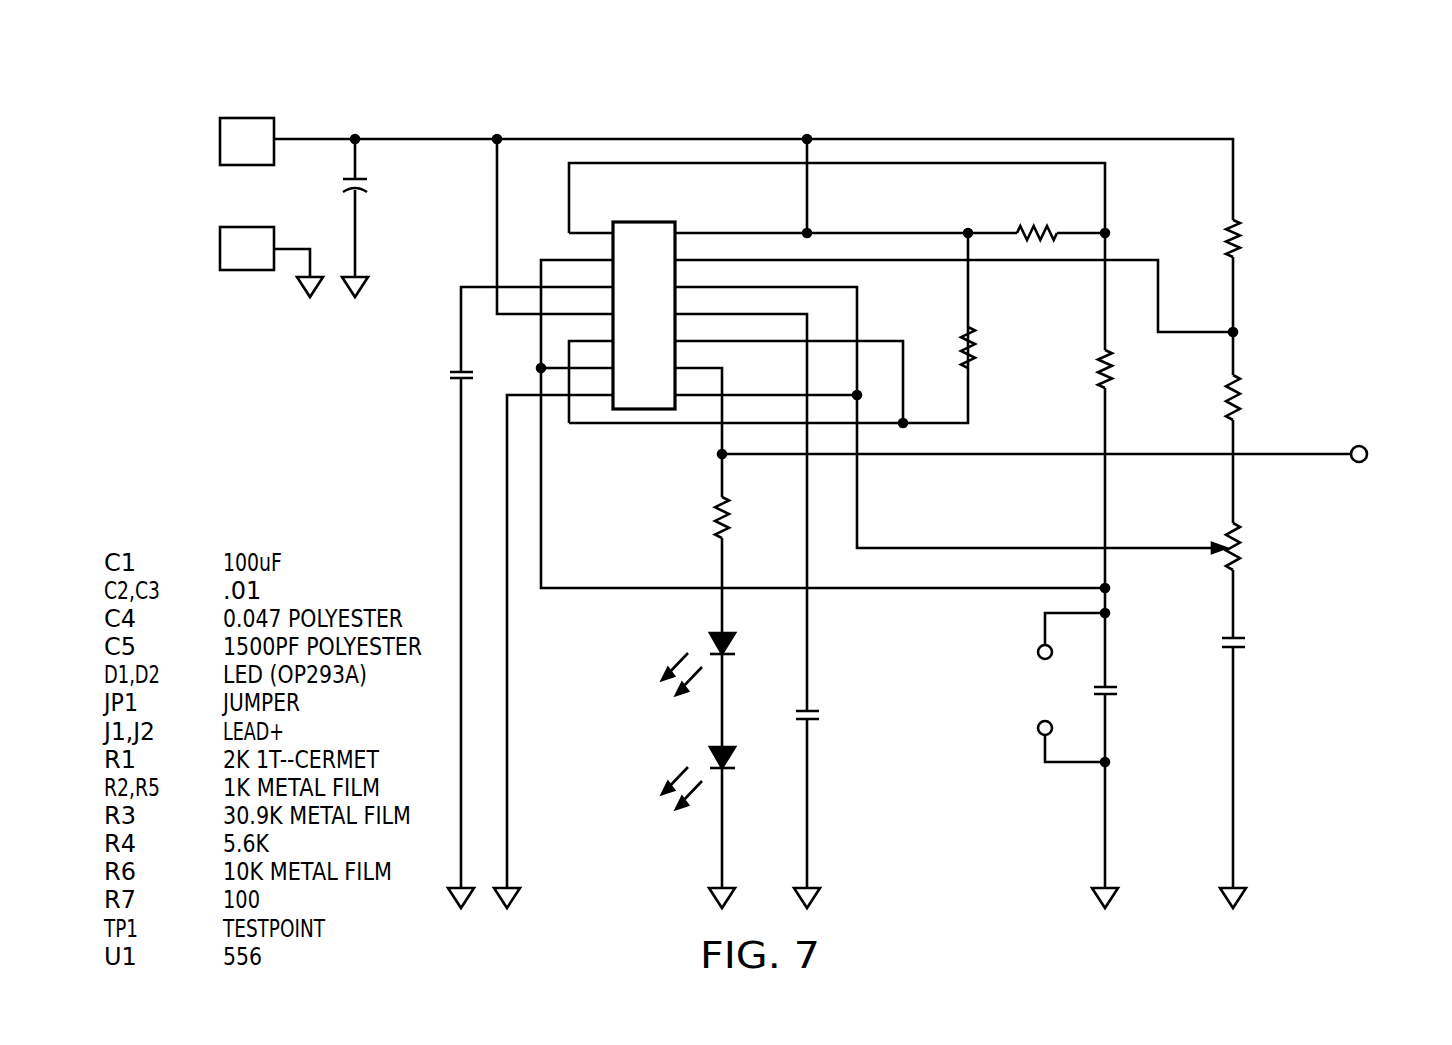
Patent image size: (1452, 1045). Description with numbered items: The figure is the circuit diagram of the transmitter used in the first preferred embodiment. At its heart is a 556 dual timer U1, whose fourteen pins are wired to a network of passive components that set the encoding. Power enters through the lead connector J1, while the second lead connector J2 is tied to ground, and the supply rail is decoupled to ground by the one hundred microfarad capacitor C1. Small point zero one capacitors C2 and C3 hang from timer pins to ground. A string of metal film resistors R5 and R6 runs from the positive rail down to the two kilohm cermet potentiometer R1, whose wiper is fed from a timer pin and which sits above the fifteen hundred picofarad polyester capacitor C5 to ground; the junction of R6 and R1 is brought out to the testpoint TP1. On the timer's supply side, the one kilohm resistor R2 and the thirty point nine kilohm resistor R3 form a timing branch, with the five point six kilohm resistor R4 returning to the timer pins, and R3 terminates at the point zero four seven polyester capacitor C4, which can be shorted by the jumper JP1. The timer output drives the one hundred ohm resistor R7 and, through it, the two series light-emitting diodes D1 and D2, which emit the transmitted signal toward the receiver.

The 556 timer integrated circuit U1 is at (651, 303).
The lead connector J1 is at (247, 128).
The lead connector J2 is at (271, 248).
The capacitor C1 is at (389, 218).
The capacitor C2 is at (436, 387).
The capacitor C3 is at (830, 712).
The polyester capacitor C4 is at (1137, 690).
The polyester capacitor C5 is at (1281, 642).
The cermet potentiometer R1 is at (1297, 537).
The metal film resistor R2 is at (1041, 218).
The metal film resistor R3 is at (1139, 387).
The resistor R4 is at (1000, 352).
The metal film resistor R5 is at (1272, 244).
The metal film resistor R6 is at (1278, 399).
The resistor R7 is at (698, 521).
The LED D1 is at (680, 674).
The LED D2 is at (680, 787).
The jumper JP1 is at (1023, 687).
The testpoint TP1 is at (1389, 425).